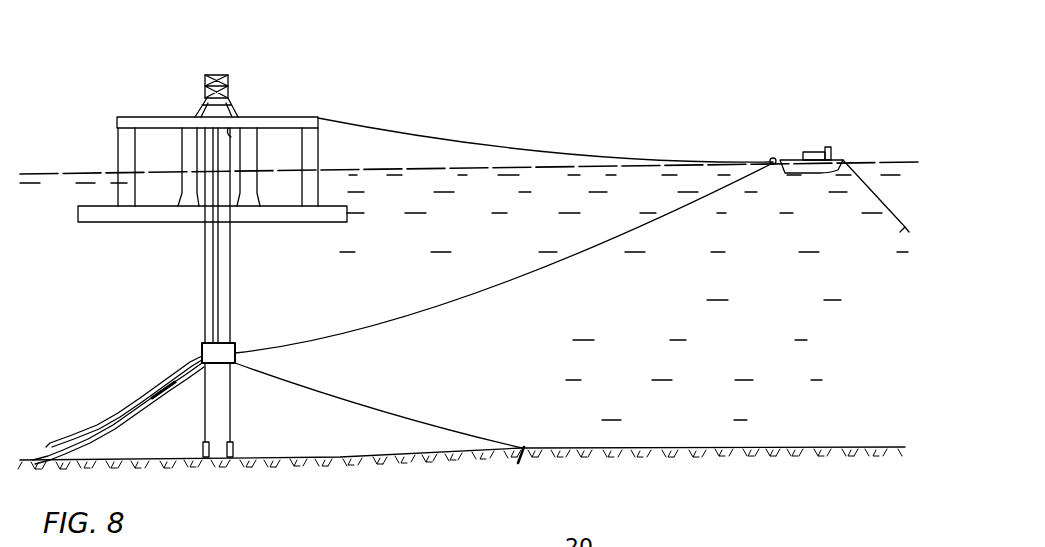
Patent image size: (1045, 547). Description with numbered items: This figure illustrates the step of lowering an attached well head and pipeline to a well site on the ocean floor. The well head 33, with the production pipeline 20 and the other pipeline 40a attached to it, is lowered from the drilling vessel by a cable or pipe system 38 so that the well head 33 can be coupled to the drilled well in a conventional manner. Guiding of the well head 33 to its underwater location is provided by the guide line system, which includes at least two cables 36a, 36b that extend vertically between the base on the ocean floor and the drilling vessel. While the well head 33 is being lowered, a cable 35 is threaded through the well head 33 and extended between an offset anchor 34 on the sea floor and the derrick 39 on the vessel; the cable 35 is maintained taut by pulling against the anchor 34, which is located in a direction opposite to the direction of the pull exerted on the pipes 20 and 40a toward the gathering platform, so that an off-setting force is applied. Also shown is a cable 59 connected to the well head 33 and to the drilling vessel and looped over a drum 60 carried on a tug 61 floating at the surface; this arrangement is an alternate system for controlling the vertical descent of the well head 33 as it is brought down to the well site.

The production pipeline 20 is at (108, 428).
The well head 33 is at (261, 324).
The anchor 34 is at (527, 453).
The cable 35 is at (215, 283).
The cable 36a is at (205, 418).
The cable 36b is at (232, 426).
The cable or pipe system 38 is at (218, 273).
The derrick 39 is at (238, 101).
The pipeline 40a is at (168, 378).
The cable 59 is at (495, 145).
The drum 60 is at (775, 158).
The tug 61 is at (812, 175).